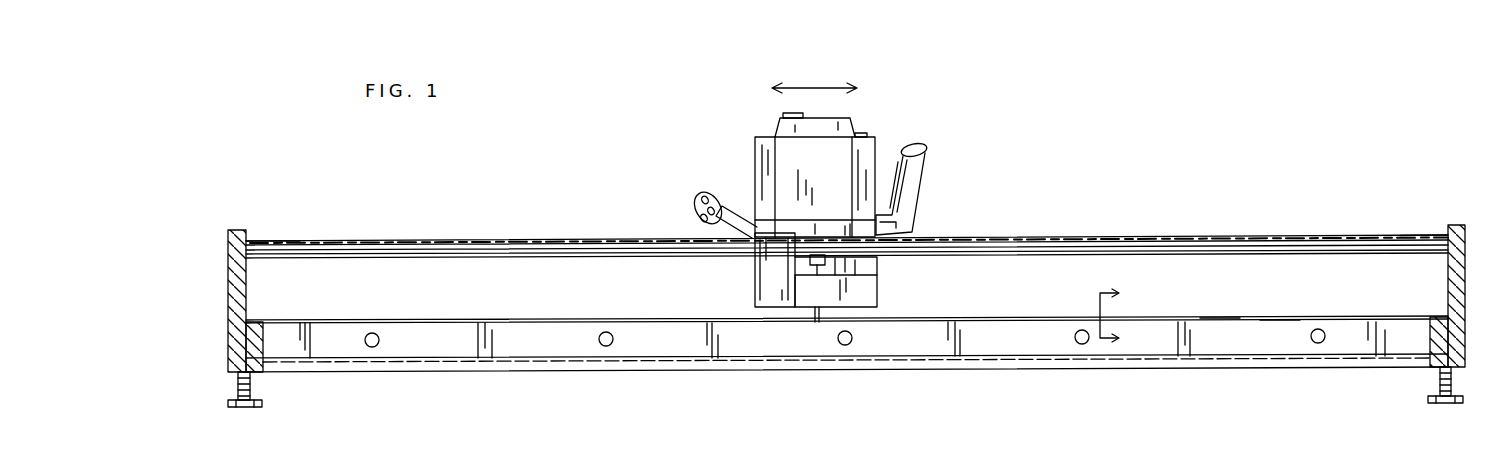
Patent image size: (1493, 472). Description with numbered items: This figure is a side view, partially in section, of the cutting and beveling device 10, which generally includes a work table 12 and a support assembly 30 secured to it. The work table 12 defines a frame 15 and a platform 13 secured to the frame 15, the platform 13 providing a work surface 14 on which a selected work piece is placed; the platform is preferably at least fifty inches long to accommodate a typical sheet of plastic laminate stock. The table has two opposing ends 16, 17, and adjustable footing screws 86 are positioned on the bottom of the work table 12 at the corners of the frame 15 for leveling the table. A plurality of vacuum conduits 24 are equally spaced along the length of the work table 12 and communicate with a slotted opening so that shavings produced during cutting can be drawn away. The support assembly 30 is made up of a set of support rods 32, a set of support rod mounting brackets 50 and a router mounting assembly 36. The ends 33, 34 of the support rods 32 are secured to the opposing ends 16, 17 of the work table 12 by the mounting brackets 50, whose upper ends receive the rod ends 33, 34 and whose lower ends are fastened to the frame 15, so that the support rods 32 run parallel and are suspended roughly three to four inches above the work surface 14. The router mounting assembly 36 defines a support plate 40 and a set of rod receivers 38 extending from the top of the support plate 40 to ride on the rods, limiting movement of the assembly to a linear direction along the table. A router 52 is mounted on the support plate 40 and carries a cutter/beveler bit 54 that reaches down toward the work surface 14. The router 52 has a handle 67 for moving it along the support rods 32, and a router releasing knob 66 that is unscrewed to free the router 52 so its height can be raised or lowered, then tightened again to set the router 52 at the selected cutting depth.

The cutting and beveling device 10 is at (205, 181).
The work table 12 is at (334, 384).
The platform 13 is at (1278, 305).
The work surface 14 is at (1222, 306).
The frame 15 is at (1435, 362).
The end of the work table 16 is at (243, 358).
The end of the work table 17 is at (1465, 366).
The vacuum conduits 24 is at (1318, 344).
The support assembly 30 is at (1312, 195).
The support rods 32 is at (1040, 248).
The end of the support rods 33 is at (268, 243).
The end of the support rods 34 is at (1436, 243).
The router mounting assembly 36 is at (878, 288).
The rod receivers 38 is at (722, 240).
The support plate 40 is at (853, 295).
The support rod mounting brackets 50 is at (228, 317).
The router 52 is at (852, 162).
The cutter/beveler bit 54 is at (817, 322).
The router releasing knob 66 is at (708, 192).
The handle 67 is at (926, 152).
The adjustable footing screws 86 is at (240, 406).